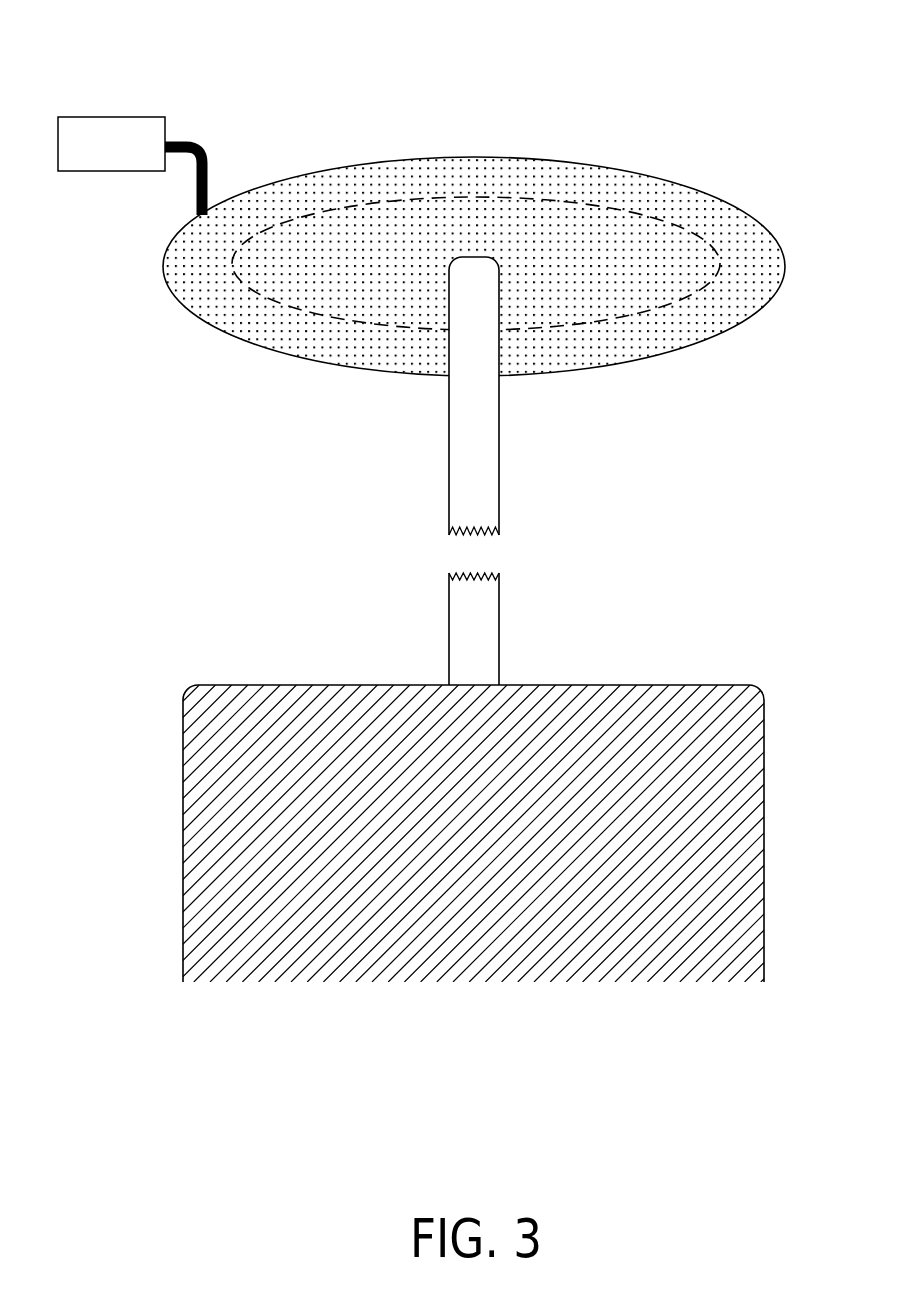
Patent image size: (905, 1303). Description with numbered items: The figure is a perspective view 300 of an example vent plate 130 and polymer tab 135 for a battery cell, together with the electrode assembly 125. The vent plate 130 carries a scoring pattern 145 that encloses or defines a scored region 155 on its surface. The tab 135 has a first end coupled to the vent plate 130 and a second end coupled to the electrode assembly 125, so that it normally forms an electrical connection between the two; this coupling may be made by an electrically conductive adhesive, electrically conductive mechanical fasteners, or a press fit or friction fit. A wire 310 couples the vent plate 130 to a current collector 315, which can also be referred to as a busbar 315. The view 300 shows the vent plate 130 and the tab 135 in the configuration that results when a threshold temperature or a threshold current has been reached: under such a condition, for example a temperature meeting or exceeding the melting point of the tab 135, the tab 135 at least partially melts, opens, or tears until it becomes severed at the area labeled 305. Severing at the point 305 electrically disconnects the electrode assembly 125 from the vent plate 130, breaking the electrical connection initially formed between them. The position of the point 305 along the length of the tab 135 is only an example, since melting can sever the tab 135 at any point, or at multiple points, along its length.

The perspective view 300 is at (369, 30).
The current collector 315 is at (111, 144).
The wire 310 is at (205, 187).
The vent plate 130 is at (645, 172).
The scored region 155 is at (593, 288).
The scoring pattern 145 is at (351, 323).
The tab 135 is at (466, 477).
The severed area 305 is at (507, 552).
The electrode assembly 125 is at (287, 700).